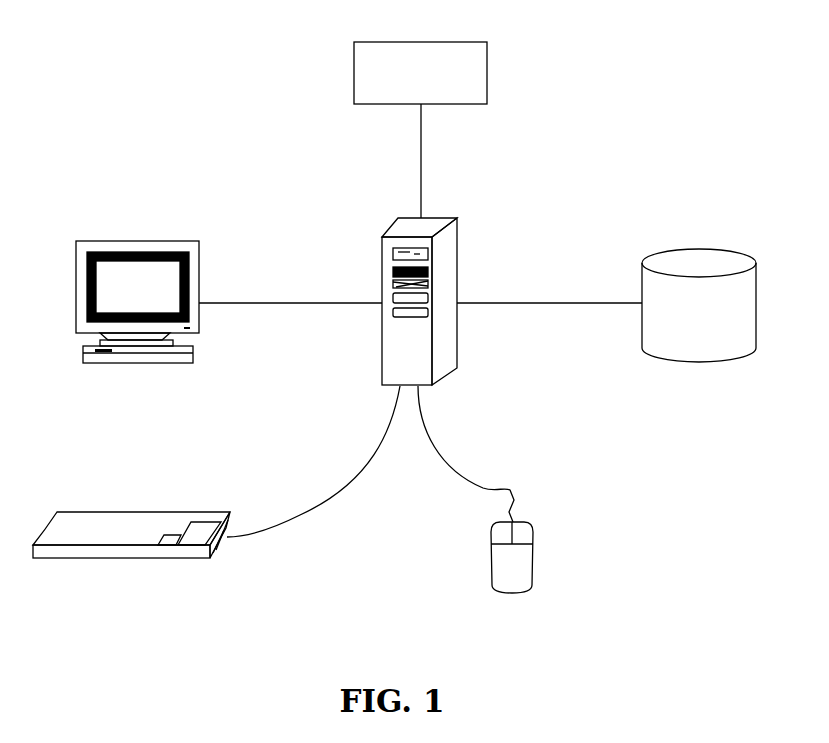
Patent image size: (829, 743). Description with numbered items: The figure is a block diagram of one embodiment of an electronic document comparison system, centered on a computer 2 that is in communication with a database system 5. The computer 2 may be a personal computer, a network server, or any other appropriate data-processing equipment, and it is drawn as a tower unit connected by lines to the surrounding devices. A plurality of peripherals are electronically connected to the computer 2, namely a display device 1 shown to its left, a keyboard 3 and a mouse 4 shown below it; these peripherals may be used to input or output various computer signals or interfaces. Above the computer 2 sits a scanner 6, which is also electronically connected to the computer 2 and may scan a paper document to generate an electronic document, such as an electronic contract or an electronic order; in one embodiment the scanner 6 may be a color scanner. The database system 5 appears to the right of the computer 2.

The display device 1 is at (137, 241).
The computer 2 is at (446, 228).
The keyboard 3 is at (117, 515).
The mouse 4 is at (535, 546).
The database system 5 is at (698, 250).
The scanner 6 is at (485, 76).